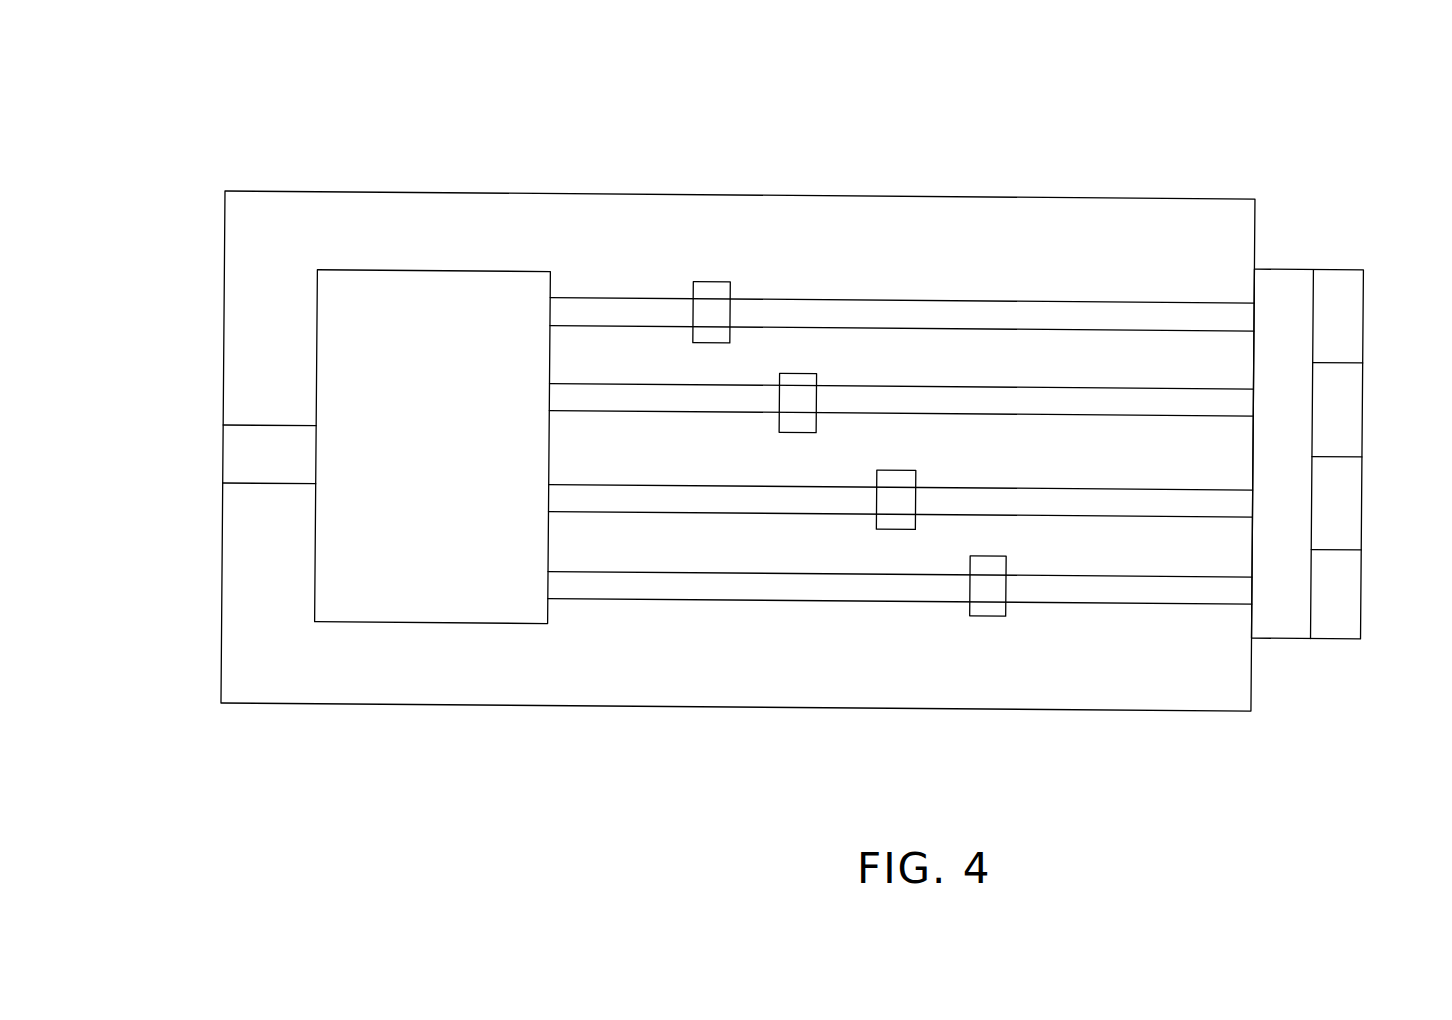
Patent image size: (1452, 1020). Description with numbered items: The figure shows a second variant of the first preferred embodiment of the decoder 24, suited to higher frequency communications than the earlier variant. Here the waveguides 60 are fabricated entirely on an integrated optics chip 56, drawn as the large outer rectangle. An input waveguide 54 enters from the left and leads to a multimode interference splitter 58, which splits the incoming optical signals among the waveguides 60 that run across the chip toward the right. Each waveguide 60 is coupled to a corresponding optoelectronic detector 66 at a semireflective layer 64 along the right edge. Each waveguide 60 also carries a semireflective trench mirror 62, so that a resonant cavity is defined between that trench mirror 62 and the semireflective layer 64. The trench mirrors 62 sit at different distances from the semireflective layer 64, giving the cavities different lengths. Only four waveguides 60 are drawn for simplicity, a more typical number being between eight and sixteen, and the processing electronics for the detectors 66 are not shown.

The decoder 24 is at (794, 368).
The input waveguide 54 is at (247, 457).
The integrated optics chip 56 is at (377, 686).
The multimode interference splitter 58 is at (433, 447).
The waveguide 60 is at (623, 313).
The semireflective trench mirror 62 is at (723, 293).
The semireflective layer 64 is at (1287, 277).
The optoelectronic detector 66 is at (1333, 328).